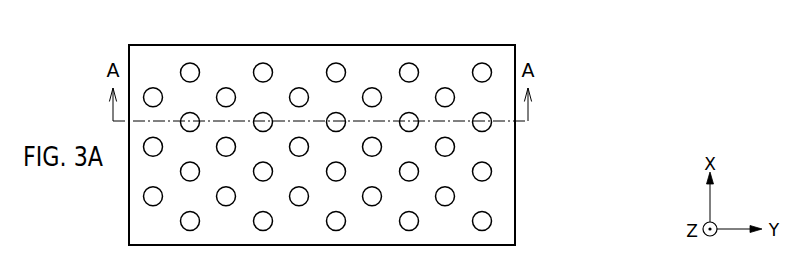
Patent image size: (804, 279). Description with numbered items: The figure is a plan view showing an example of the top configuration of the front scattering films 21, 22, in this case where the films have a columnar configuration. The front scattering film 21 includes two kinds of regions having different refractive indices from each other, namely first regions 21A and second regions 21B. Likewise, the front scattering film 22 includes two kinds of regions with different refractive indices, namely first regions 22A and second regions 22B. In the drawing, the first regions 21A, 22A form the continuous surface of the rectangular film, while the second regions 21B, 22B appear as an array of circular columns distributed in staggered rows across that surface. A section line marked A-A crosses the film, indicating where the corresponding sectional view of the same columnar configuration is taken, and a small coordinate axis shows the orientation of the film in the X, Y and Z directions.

The front scattering film 21 is at (378, 124).
The front scattering film 22 is at (557, 58).
The first regions 21A is at (379, 145).
The first regions 22A is at (488, 145).
The second regions 21B is at (386, 150).
The second regions 22B is at (482, 221).